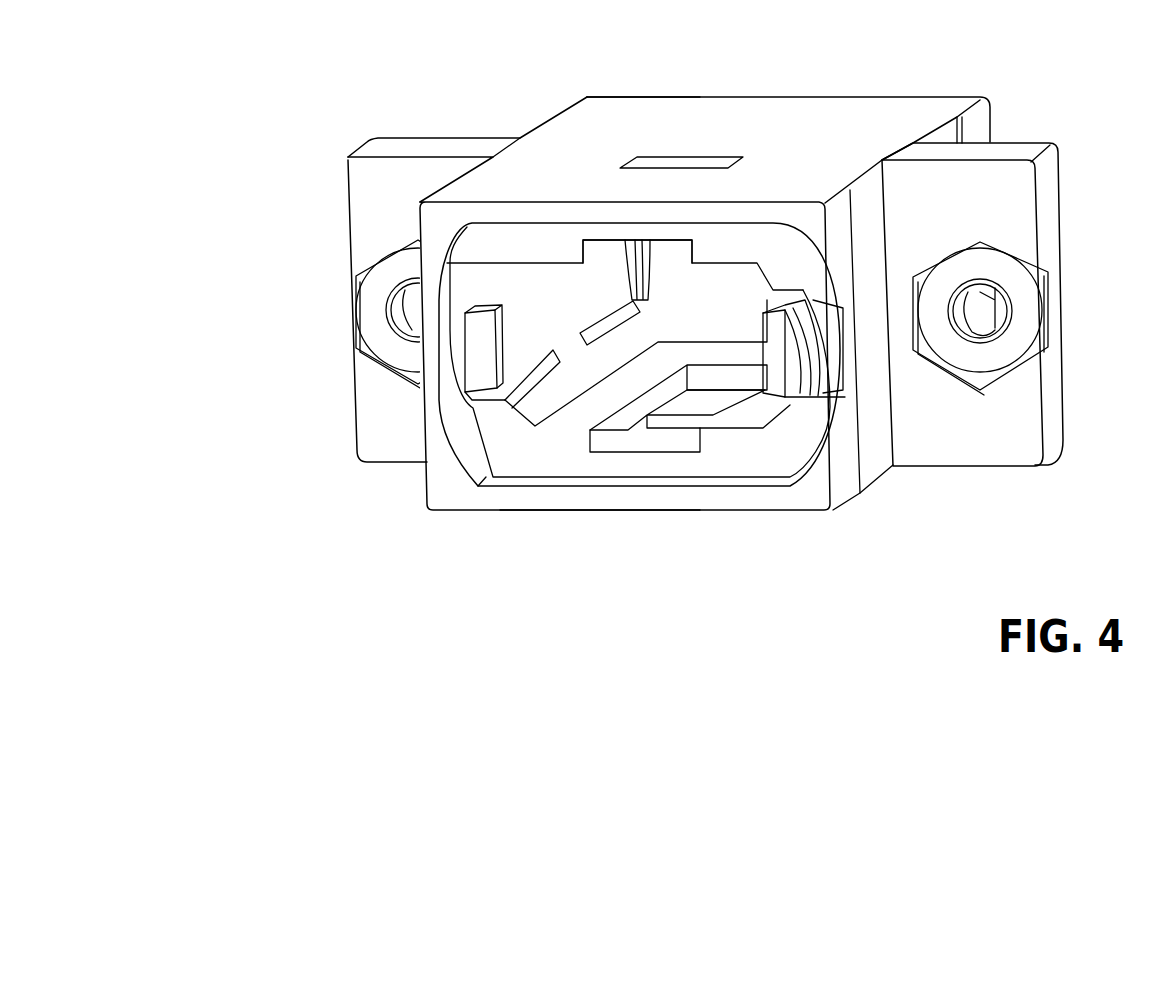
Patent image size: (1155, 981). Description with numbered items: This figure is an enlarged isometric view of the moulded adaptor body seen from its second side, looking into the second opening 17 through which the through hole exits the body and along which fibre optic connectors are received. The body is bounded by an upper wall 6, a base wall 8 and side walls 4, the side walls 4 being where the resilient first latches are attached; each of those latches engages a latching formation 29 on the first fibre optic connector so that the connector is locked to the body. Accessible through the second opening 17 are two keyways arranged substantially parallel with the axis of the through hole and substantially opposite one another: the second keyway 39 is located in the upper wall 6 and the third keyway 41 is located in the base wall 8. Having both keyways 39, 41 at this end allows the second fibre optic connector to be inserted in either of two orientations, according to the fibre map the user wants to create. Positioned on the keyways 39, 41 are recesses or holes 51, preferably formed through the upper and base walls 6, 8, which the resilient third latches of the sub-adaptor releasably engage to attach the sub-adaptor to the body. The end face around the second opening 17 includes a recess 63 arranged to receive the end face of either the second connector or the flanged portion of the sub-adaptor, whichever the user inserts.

The side wall 4 is at (427, 427).
The upper wall 6 is at (592, 113).
The base wall 8 is at (603, 508).
The second opening 17 is at (548, 424).
The latching formation 29 is at (477, 342).
The second keyway 39 is at (587, 250).
The third keyway 41 is at (633, 443).
The recess/hole 51 is at (655, 162).
The recess 63 is at (747, 482).